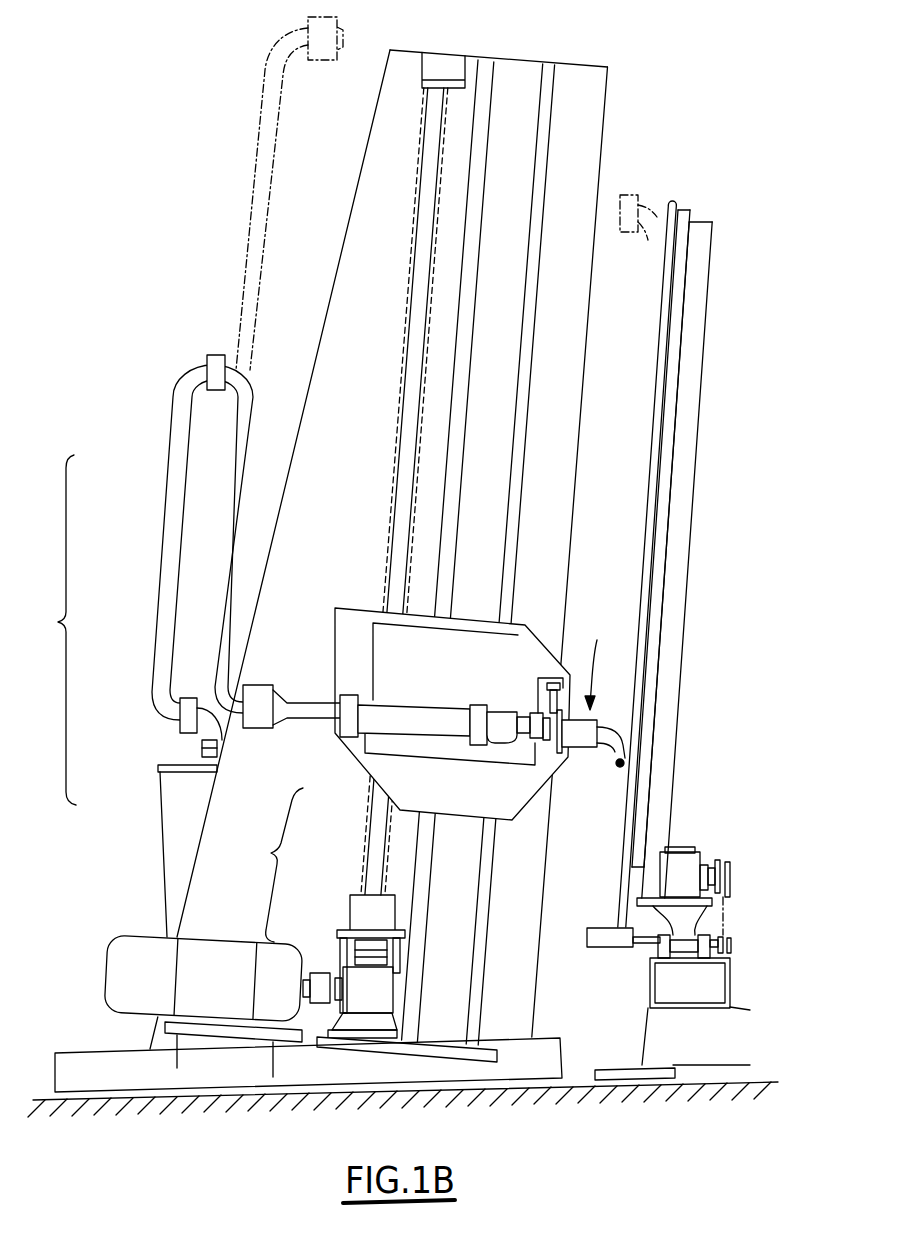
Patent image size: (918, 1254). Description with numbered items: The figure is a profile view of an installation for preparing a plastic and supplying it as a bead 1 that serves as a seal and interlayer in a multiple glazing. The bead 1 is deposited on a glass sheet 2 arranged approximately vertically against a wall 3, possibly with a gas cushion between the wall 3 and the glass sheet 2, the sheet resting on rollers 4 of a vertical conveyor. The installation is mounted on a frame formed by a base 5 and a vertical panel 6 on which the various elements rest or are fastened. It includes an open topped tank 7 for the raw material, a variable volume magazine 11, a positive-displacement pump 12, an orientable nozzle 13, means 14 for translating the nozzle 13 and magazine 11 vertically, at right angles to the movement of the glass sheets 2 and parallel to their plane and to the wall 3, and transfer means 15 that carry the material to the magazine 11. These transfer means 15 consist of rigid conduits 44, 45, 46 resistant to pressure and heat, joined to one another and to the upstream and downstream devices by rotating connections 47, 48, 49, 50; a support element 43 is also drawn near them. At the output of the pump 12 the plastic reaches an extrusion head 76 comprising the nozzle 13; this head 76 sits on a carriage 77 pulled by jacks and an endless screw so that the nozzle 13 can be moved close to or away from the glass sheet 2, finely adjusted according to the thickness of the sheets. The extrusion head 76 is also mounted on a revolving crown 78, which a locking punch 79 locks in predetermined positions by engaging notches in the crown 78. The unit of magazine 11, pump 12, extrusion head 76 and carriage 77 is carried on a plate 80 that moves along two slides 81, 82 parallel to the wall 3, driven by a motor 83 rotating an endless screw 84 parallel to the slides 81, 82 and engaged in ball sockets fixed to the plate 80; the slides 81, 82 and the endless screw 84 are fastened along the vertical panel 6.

The bead 1 is at (627, 777).
The glass sheet 2 is at (633, 743).
The wall 3 is at (648, 692).
The rollers 4 is at (617, 938).
The base 5 is at (145, 1073).
The vertical panel 6 is at (590, 115).
The tank 7 is at (178, 853).
The variable volume magazine 11 is at (415, 722).
The positive-displacement pump 12 is at (503, 725).
The nozzle 13 is at (608, 720).
The translation means 14 is at (324, 913).
The transfer means 15 is at (52, 630).
The support bracket 43 is at (200, 772).
The rigid conduit 44 is at (195, 738).
The rigid conduit 45 is at (162, 622).
The rigid conduit 46 is at (230, 567).
The rotating connection 47 is at (203, 747).
The rotating connection 48 is at (182, 707).
The rotating connection 49 is at (212, 383).
The rotating connection 50 is at (252, 698).
The extrusion head 76 is at (601, 665).
The carriage 77 is at (390, 650).
The crown 78 is at (557, 757).
The locking punch 79 is at (560, 697).
The plate 80 is at (383, 770).
The slide 81 is at (420, 862).
The slide 82 is at (485, 833).
The motor 83 is at (243, 965).
The endless screw 84 is at (372, 882).